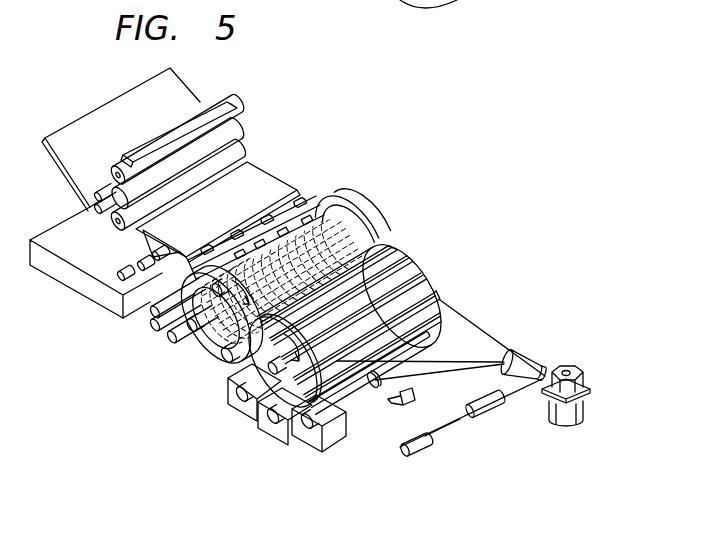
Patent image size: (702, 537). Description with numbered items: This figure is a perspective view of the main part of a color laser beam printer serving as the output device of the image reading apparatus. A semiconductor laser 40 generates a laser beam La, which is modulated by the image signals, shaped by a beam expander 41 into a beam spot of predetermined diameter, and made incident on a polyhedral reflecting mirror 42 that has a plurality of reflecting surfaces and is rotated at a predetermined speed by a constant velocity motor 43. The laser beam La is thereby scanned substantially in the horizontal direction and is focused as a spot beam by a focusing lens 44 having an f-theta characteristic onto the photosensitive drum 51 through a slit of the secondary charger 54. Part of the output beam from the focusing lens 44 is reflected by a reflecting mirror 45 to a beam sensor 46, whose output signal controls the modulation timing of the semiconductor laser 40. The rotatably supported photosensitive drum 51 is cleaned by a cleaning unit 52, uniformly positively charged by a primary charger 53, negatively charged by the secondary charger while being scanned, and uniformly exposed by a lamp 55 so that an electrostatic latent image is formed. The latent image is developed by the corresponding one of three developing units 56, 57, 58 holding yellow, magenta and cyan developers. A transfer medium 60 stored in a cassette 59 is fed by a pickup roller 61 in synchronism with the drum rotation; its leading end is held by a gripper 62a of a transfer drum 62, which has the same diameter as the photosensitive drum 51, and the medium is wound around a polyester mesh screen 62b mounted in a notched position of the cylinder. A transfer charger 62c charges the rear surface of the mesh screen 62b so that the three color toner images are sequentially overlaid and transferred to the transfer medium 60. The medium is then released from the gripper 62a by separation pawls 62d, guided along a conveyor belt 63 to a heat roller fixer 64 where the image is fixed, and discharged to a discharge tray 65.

The semiconductor laser 40 is at (407, 456).
The beam expander 41 is at (490, 422).
The polyhedral reflecting mirror 42 is at (575, 377).
The constant velocity motor 43 is at (562, 418).
The focusing lens 44 is at (530, 356).
The reflecting mirror 45 is at (369, 389).
The beam sensor 46 is at (395, 411).
The photosensitive drum 51 is at (421, 265).
The cleaning unit 52 is at (401, 250).
The primary charger 53 is at (424, 268).
The secondary charger 54 is at (440, 299).
The lamp 55 is at (430, 337).
The developing unit 56 is at (310, 442).
The developing unit 57 is at (268, 436).
The developing unit 58 is at (230, 393).
The cassette 59 is at (62, 277).
The transfer medium 60 is at (118, 281).
The pickup roller 61 is at (122, 297).
The transfer drum 62 is at (290, 264).
The gripper 62a is at (322, 204).
The mesh screen 62b is at (351, 217).
The transfer charger 62c is at (207, 348).
The separation pawls 62d is at (303, 198).
The conveyor belt 63 is at (254, 168).
The heat roller fixer 64 is at (231, 108).
The discharge tray 65 is at (127, 102).
The laser beam La is at (440, 433).